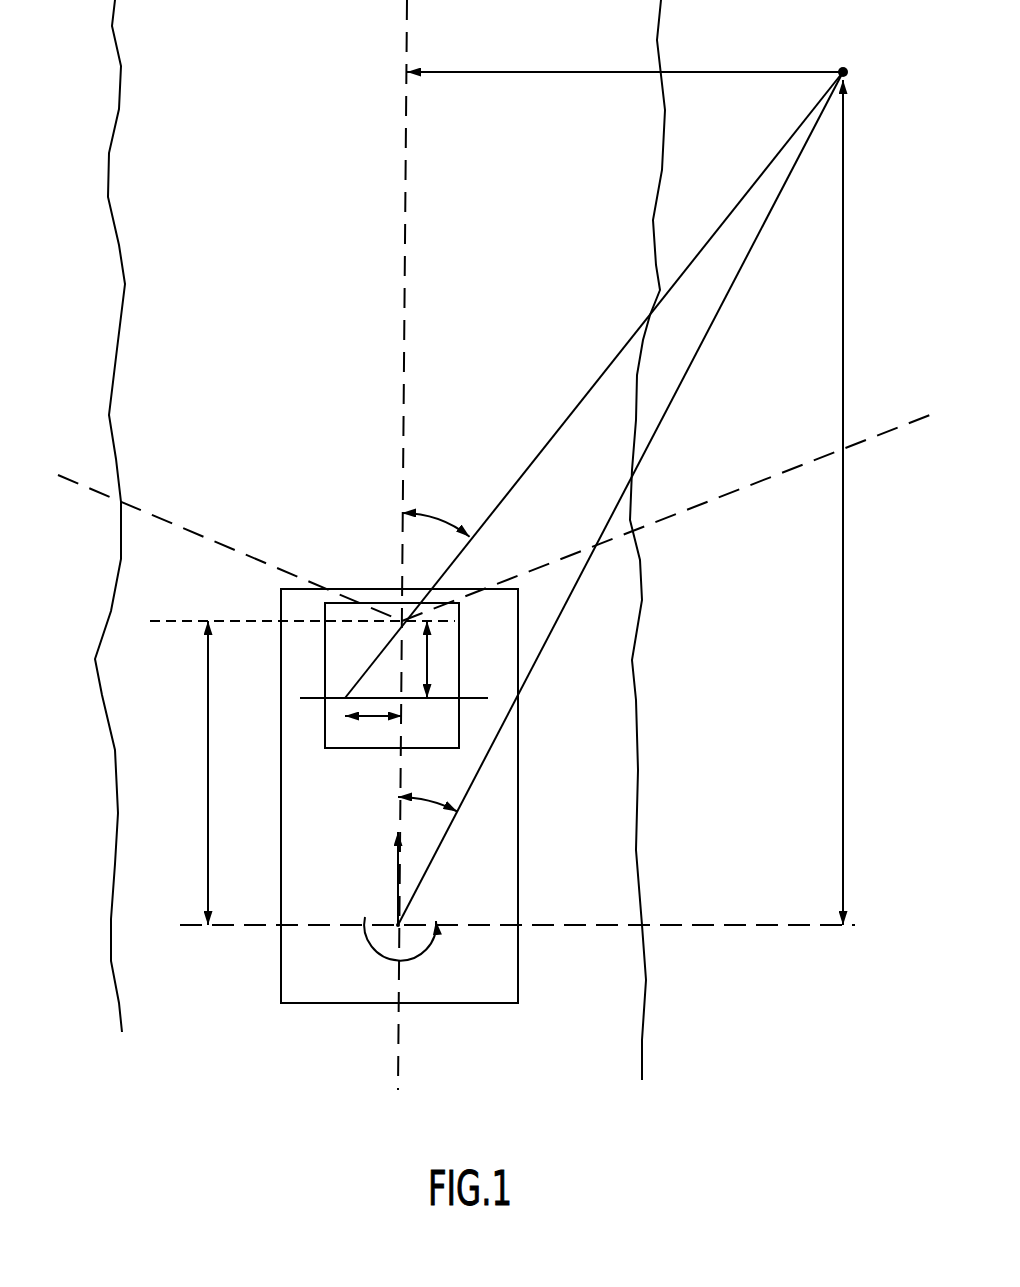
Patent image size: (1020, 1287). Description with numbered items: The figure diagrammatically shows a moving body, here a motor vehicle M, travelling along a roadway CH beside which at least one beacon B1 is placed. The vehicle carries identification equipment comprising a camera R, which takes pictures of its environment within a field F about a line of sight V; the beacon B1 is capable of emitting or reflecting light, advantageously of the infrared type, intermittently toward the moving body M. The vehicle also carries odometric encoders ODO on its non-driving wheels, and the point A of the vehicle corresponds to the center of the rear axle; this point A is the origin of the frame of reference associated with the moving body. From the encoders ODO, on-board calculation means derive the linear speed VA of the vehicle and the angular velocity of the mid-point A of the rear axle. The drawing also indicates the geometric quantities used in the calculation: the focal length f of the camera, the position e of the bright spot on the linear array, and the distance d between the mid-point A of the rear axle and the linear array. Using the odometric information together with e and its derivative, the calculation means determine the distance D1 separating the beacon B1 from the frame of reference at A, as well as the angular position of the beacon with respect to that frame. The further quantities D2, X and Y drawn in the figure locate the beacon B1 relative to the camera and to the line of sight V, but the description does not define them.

The roadway CH is at (618, 990).
The line of sight V is at (403, 42).
The beacon B1 is at (850, 68).
The lateral distance Y to target Y is at (582, 72).
The longitudinal distance X to target X is at (839, 550).
The distance D2 from sensor to target D2 is at (602, 370).
The distance D1 is at (676, 392).
The field F is at (93, 490).
The motor vehicle M is at (497, 1003).
The sensor (radar/camera) unit R is at (330, 603).
The focal length f is at (427, 655).
The position of the bright spot e is at (380, 714).
The distance between rear axle mid-point and linear array d is at (208, 765).
The linear speed VA is at (366, 838).
The point of the vehicle A is at (396, 923).
The encoders ODO is at (394, 932).